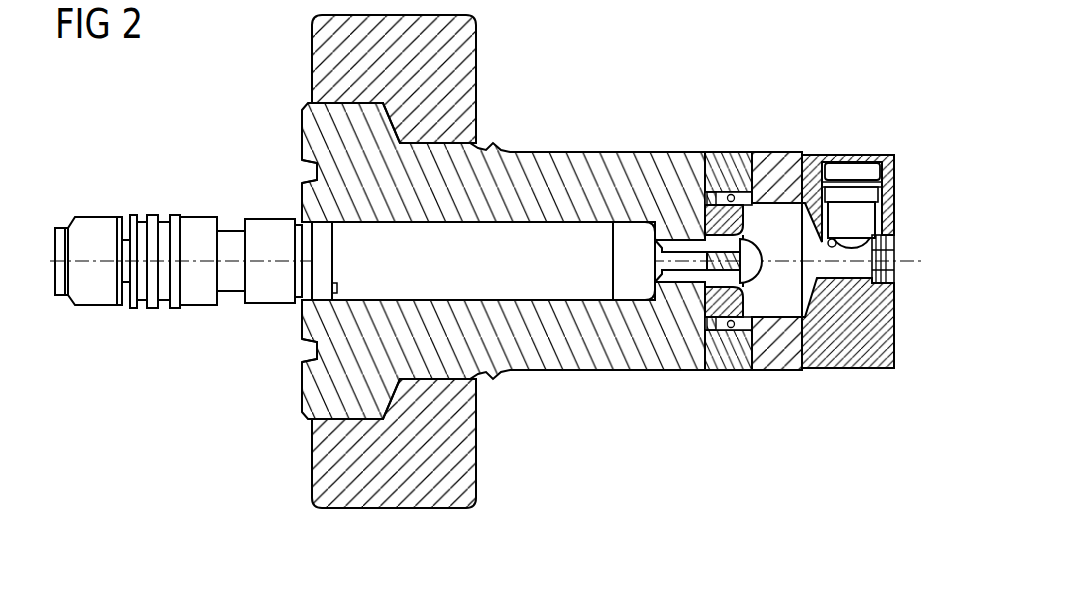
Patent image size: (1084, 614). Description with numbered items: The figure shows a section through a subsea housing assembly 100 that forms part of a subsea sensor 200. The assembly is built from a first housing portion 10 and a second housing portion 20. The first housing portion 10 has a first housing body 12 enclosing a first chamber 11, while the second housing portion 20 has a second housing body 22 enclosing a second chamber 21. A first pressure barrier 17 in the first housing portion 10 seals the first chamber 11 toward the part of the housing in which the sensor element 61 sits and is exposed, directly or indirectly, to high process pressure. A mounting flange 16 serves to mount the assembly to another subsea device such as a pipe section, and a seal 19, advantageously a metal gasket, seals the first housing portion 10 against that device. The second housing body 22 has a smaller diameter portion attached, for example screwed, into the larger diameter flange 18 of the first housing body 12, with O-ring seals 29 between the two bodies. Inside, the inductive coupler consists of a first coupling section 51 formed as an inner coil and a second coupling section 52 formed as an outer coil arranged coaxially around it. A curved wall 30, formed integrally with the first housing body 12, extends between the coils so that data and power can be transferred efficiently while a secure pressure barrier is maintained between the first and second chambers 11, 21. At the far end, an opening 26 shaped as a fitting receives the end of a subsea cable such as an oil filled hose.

The first housing portion 10 is at (552, 102).
The first chamber 11 is at (567, 290).
The first housing body 12 is at (600, 152).
The mounting flange 16 is at (407, 512).
The first pressure barrier 17 is at (348, 270).
The flange 18 is at (737, 157).
The seal 19 is at (312, 172).
The second housing portion 20 is at (832, 402).
The second chamber 21 is at (795, 192).
The second housing body 22 is at (893, 335).
The opening 26 is at (865, 218).
The seals 29 is at (735, 335).
The wall 30 is at (727, 277).
The first coupling section 51 is at (757, 246).
The second coupling section 52 is at (705, 192).
The sensor element 61 is at (92, 228).
The subsea housing assembly 100 is at (683, 503).
The subsea sensor 200 is at (143, 503).